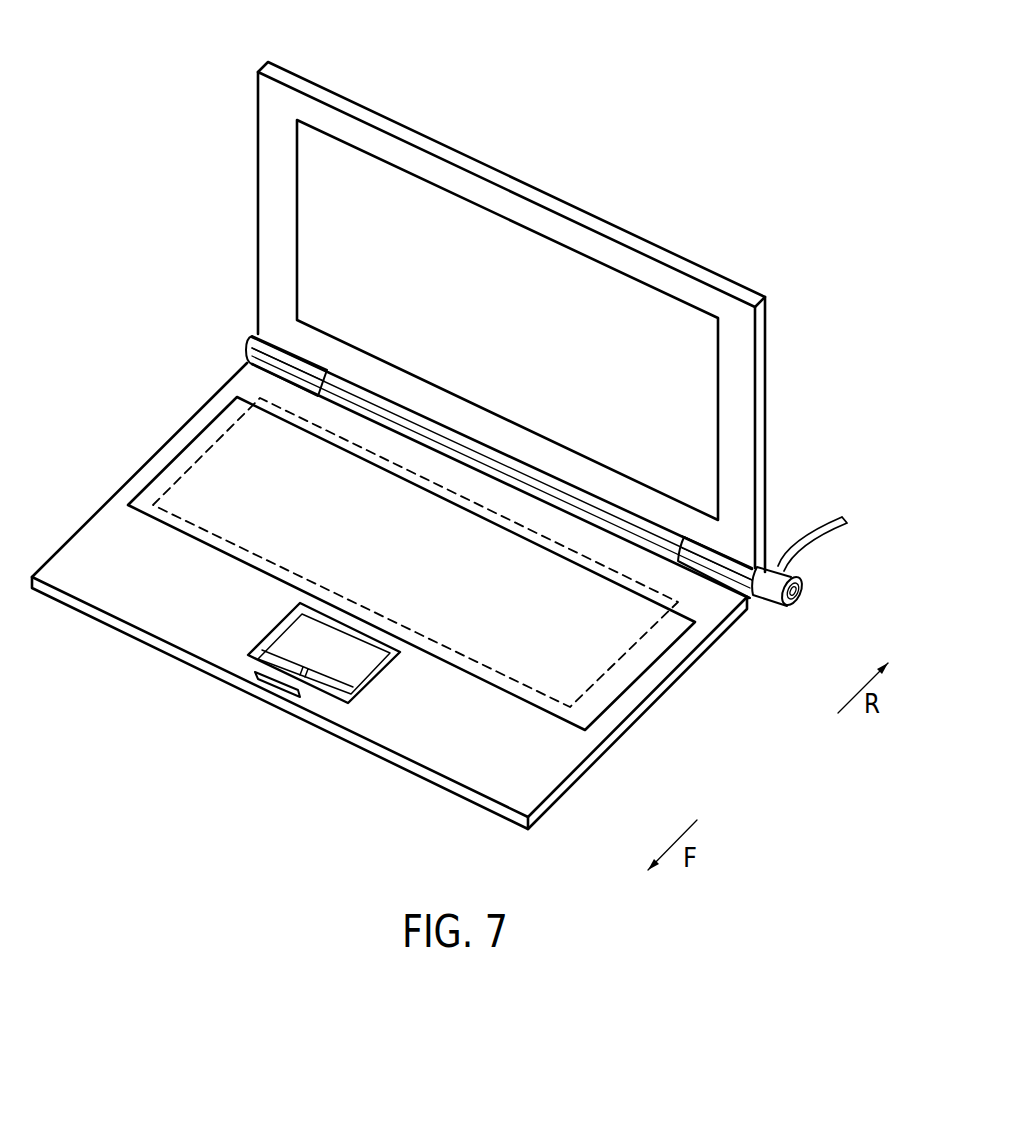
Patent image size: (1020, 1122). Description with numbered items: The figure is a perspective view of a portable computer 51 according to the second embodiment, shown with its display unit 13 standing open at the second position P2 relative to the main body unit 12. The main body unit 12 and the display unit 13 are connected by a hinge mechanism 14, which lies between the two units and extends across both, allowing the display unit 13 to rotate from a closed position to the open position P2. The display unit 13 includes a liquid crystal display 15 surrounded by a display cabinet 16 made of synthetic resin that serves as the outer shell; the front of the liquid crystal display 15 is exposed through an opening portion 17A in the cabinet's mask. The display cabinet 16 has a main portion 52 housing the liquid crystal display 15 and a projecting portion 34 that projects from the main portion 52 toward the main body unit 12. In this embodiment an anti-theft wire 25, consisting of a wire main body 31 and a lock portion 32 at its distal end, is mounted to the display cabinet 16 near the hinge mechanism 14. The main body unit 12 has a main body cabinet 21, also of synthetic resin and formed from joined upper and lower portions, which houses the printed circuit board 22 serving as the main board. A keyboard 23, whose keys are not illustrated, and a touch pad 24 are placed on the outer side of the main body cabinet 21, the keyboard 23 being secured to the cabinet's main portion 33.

The second position P2 is at (248, 58).
The main body unit 12 is at (165, 420).
The display unit 13 is at (225, 172).
The hinge mechanism 14 is at (253, 340).
The liquid crystal display 15 is at (630, 303).
The display cabinet 16 is at (747, 287).
The opening portion 17A is at (563, 242).
The main body cabinet 21 is at (93, 537).
The printed circuit board 22 is at (190, 465).
The keyboard 23 is at (608, 656).
The touch pad 24 is at (302, 628).
The anti-theft wire 25 is at (810, 598).
The wire main body 31 is at (808, 548).
The lock portion 32 is at (770, 600).
The main portion 33 is at (682, 652).
The projecting portion 34 is at (305, 362).
The portable computer 51 is at (577, 122).
The main portion 52 is at (733, 603).